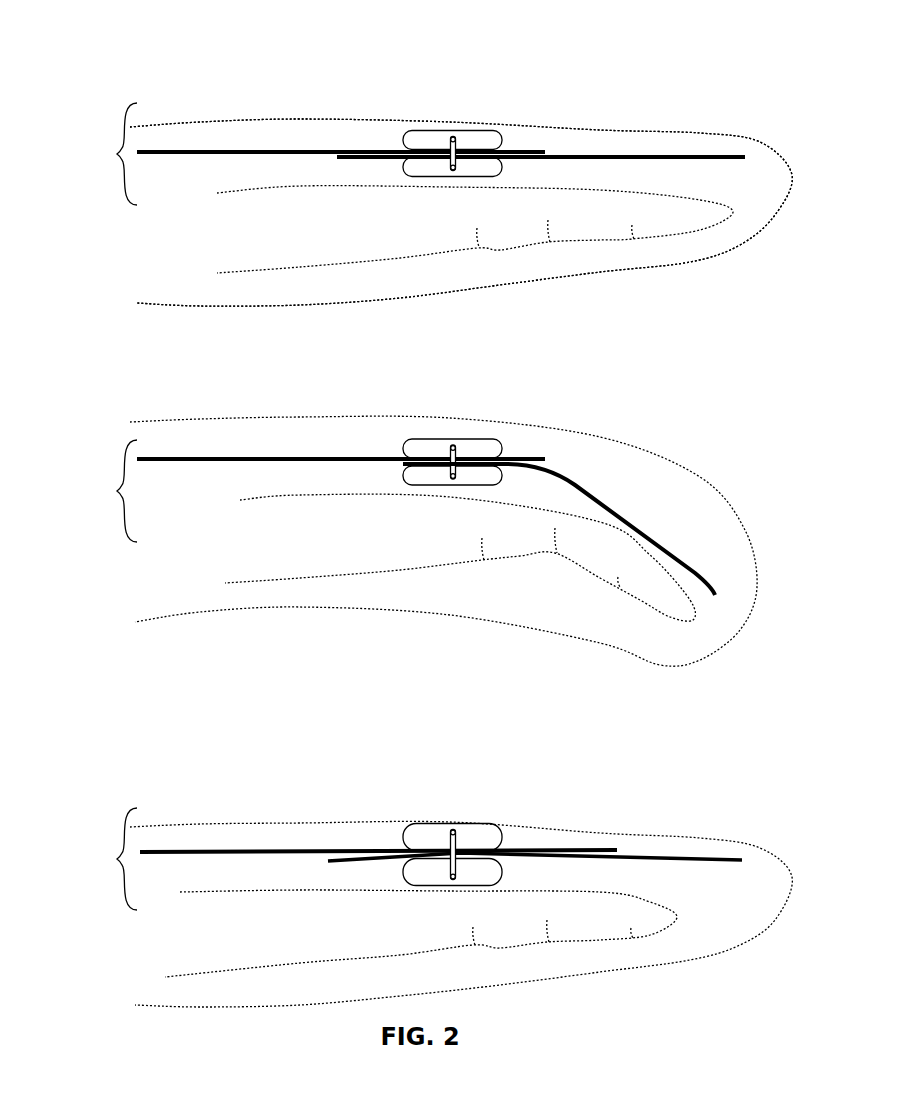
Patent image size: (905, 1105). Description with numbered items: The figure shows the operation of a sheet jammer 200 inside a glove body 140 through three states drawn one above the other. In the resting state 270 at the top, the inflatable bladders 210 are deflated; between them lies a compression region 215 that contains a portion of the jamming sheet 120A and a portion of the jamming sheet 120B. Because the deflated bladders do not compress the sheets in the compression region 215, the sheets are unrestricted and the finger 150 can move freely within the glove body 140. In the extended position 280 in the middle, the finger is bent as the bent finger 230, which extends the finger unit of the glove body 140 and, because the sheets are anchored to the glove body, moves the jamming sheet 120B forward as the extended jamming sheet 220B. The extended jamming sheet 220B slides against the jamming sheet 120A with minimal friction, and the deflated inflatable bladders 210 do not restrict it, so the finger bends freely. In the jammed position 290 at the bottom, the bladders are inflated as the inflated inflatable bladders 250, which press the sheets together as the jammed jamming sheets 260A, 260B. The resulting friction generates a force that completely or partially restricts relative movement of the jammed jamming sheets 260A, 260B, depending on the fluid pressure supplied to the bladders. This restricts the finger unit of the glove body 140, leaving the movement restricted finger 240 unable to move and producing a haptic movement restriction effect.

The sheet jammer 200 is at (92, 506).
The glove body 140 is at (750, 244).
The finger 150 is at (475, 229).
The resting state 270 is at (115, 67).
The jamming sheet 120A is at (276, 453).
The jamming sheet 120B is at (661, 150).
The inflatable bladders 210 is at (493, 433).
The compression region 215 is at (404, 147).
The extended position 280 is at (137, 409).
The bent finger 230 is at (455, 557).
The extended jamming sheet 220B is at (634, 515).
The jammed position 290 is at (135, 797).
The movement restricted finger 240 is at (416, 933).
The jammed jamming sheet 260A is at (300, 820).
The jammed jamming sheet 260B is at (660, 848).
The inflated inflatable bladders 250 is at (504, 832).